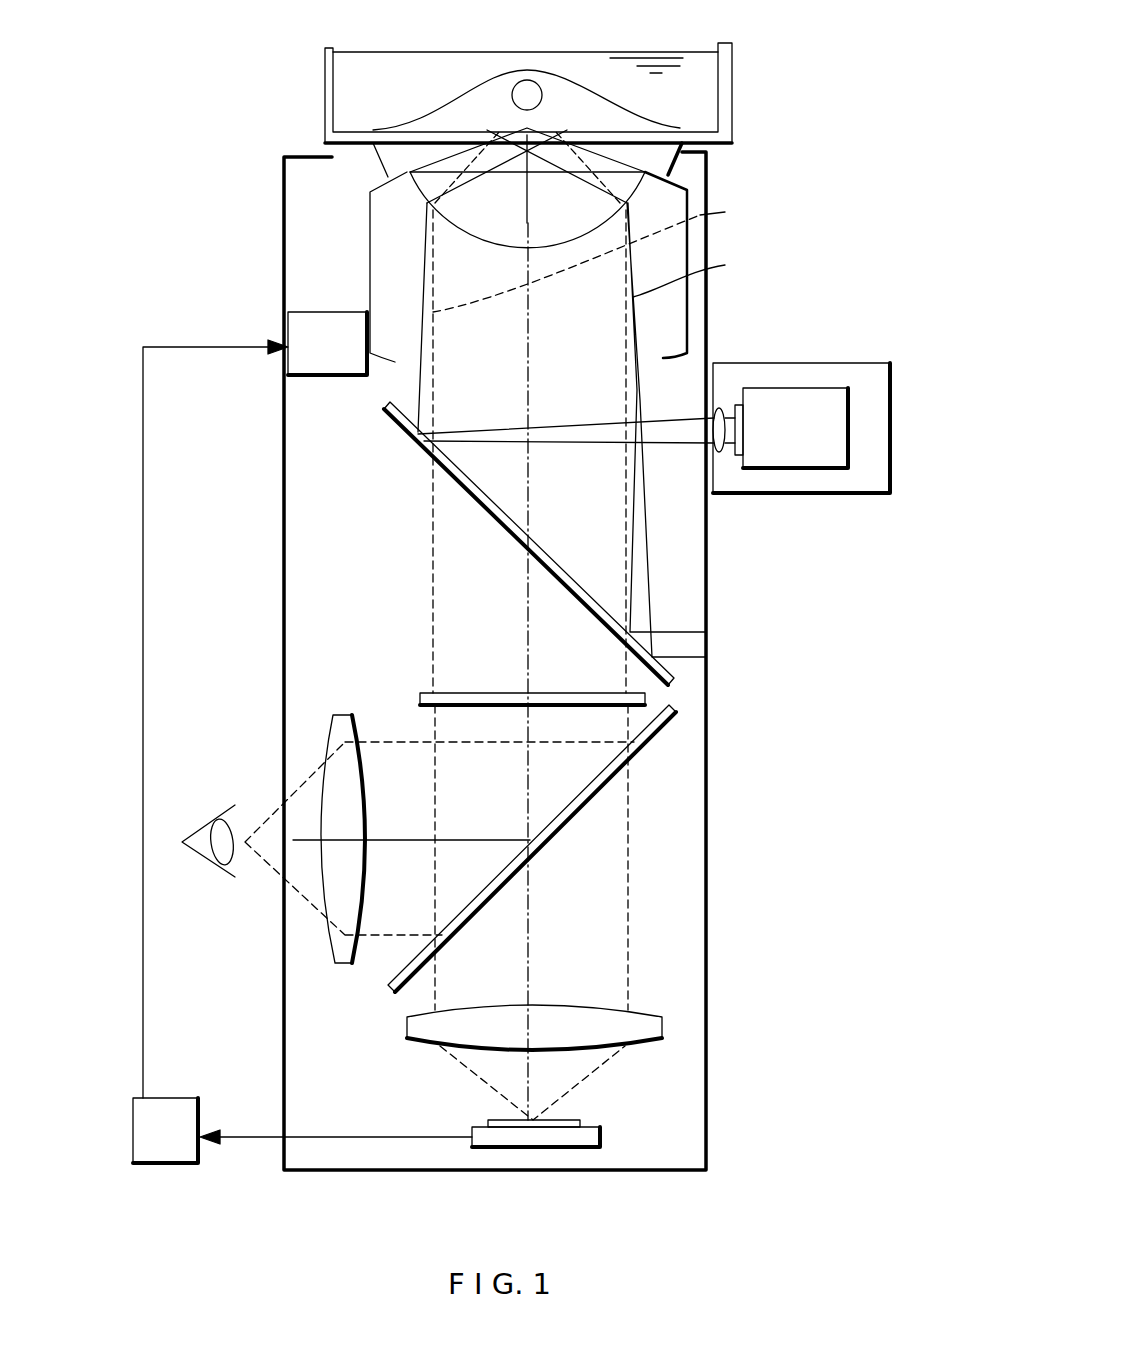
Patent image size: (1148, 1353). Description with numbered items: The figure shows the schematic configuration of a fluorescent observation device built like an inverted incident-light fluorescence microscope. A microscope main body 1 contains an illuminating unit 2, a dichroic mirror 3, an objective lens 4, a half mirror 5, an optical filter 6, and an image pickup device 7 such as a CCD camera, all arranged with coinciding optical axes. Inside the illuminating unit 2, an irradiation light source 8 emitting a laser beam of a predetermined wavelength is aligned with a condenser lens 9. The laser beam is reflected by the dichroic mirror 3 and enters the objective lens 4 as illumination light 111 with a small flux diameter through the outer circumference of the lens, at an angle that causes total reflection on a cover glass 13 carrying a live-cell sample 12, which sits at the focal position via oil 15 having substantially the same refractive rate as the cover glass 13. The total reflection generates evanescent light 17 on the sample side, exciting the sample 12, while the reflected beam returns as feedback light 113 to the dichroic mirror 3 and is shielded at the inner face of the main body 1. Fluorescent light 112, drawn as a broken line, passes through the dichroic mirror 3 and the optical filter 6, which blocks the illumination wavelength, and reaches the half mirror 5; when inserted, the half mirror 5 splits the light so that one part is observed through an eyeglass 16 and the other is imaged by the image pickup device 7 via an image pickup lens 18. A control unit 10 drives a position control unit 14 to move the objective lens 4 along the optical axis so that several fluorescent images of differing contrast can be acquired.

The microscope main body 1 is at (708, 1100).
The illuminating unit 2 is at (840, 495).
The dichroic mirror 3 is at (416, 450).
The objective lens 4 is at (468, 212).
The half mirror 5 is at (676, 715).
The optical filter 6 is at (482, 693).
The image pickup device 7 is at (575, 1148).
The irradiation light source 8 is at (770, 470).
The condenser lens 9 is at (717, 408).
The control unit 10 is at (175, 1098).
The sample 12 is at (567, 97).
The cover glass 13 is at (733, 108).
The position control unit 14 is at (317, 375).
The oil 15 is at (378, 155).
The eyeglass 16 is at (333, 955).
The evanescent light 17 is at (507, 130).
The image pickup lens 18 is at (660, 1025).
The illumination light 111 is at (415, 328).
The fluorescent light 112 is at (608, 253).
The feedback light 113 is at (708, 272).